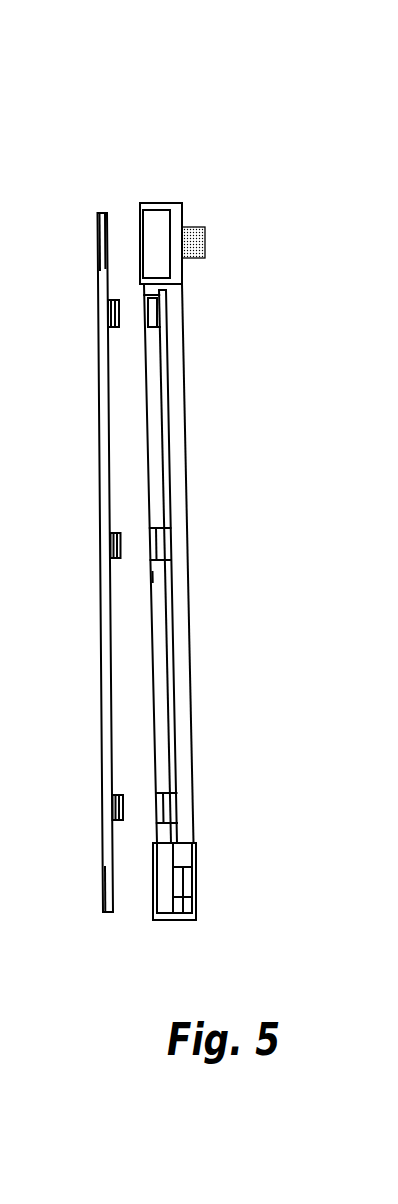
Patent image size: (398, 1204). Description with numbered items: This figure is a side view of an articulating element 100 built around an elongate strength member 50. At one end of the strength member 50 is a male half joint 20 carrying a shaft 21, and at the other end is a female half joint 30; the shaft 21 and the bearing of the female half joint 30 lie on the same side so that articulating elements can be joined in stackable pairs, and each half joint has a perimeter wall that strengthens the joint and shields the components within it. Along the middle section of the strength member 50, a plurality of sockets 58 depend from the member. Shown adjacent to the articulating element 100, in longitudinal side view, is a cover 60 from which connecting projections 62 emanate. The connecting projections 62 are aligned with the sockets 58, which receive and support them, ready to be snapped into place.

The articulating element 100 is at (75, 110).
The male half joint 20 is at (182, 188).
The shaft 21 is at (198, 238).
The socket 58 is at (157, 322).
The cover 60 is at (98, 380).
The connecting projection 62 is at (112, 552).
The strength member 50 is at (195, 592).
The female half joint 30 is at (207, 880).